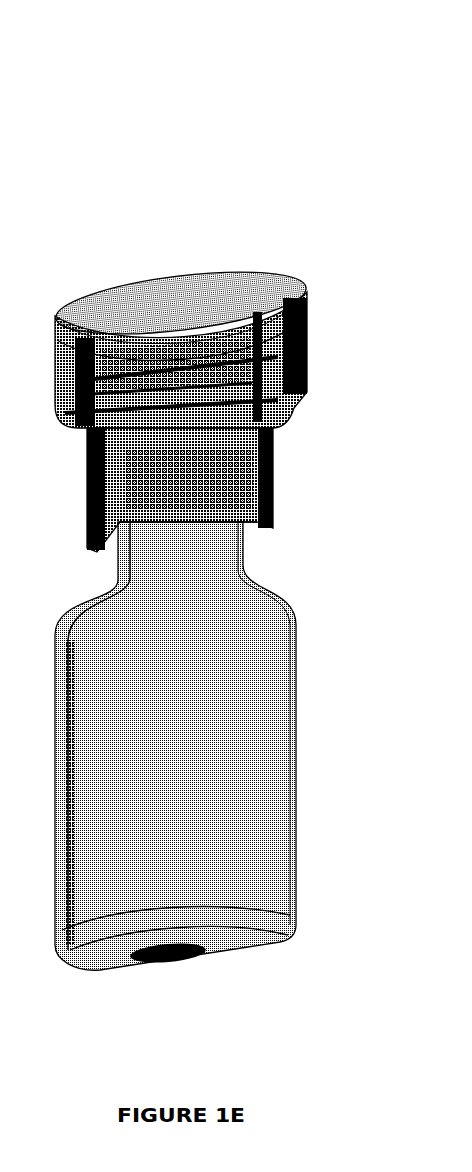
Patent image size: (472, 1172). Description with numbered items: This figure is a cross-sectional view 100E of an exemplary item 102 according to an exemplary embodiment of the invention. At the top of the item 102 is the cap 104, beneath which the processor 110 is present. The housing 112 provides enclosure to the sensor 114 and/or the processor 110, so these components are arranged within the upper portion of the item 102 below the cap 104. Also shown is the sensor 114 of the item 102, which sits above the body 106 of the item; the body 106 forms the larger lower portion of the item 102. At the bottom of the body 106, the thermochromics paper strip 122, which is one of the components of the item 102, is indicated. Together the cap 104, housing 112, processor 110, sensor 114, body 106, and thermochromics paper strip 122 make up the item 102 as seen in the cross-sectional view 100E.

The cross-sectional view 100E is at (285, 127).
The item 102 is at (183, 242).
The cap 104 is at (283, 298).
The body 106 is at (285, 748).
The processor 110 is at (278, 370).
The housing 112 is at (278, 417).
The sensor 114 is at (265, 472).
The thermochromics paper strip 122 is at (167, 957).